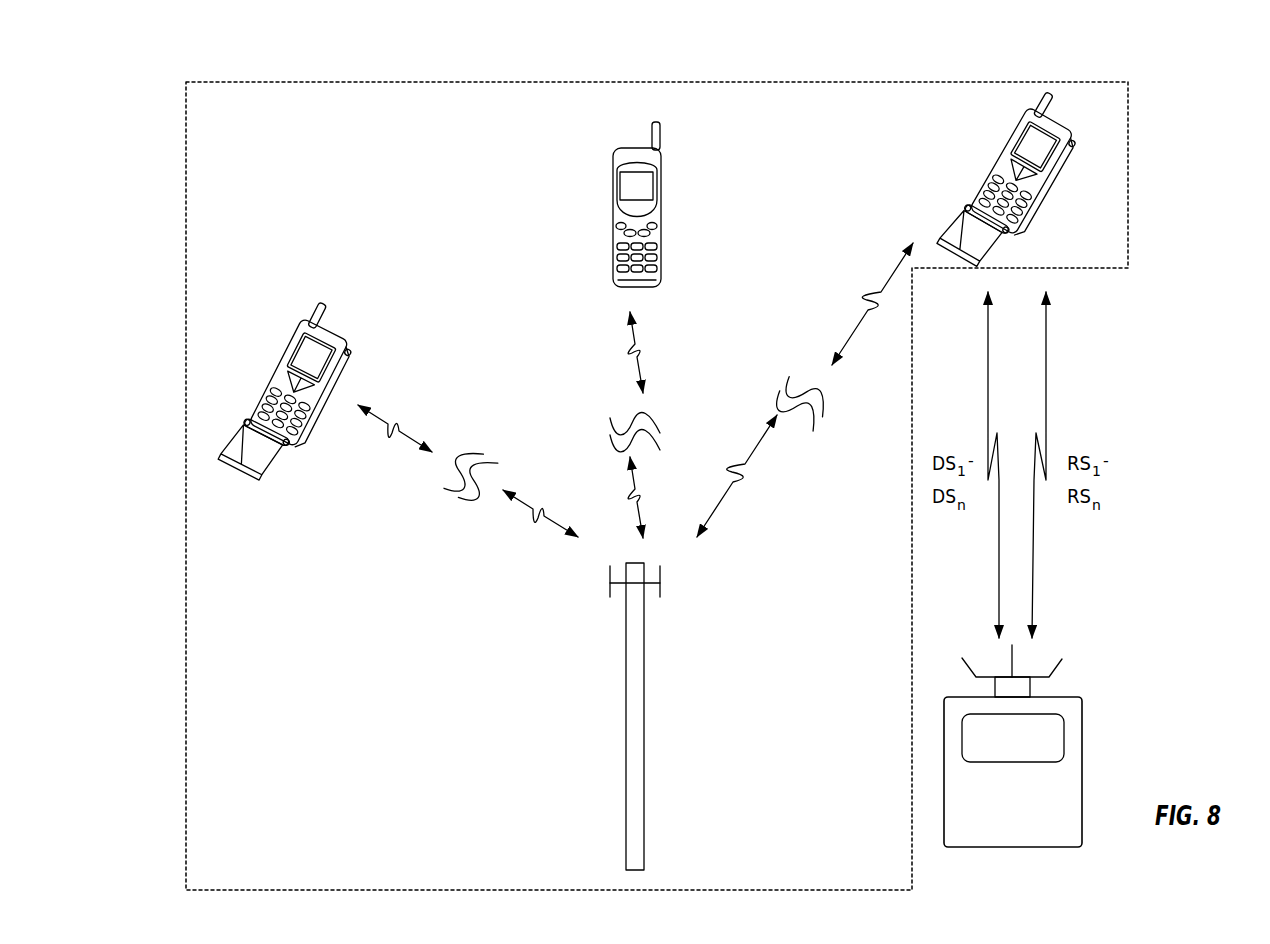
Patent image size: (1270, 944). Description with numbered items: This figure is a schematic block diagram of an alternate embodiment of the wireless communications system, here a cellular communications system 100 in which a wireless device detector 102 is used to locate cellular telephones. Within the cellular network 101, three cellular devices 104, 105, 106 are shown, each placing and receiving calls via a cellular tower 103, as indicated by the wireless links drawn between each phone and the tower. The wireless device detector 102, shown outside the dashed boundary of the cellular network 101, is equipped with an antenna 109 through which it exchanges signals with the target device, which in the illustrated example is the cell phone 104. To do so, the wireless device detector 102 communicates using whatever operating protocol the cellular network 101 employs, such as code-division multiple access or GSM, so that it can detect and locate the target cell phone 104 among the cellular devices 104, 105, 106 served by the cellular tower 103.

The cellular communications system 100 is at (170, 70).
The cellular network 101 is at (1130, 116).
The wireless device detector 102 is at (1083, 751).
The cellular tower 103 is at (626, 660).
The cellular device 104 is at (1002, 155).
The cellular device 105 is at (620, 148).
The cellular device 106 is at (335, 340).
The antenna 109 is at (1062, 661).